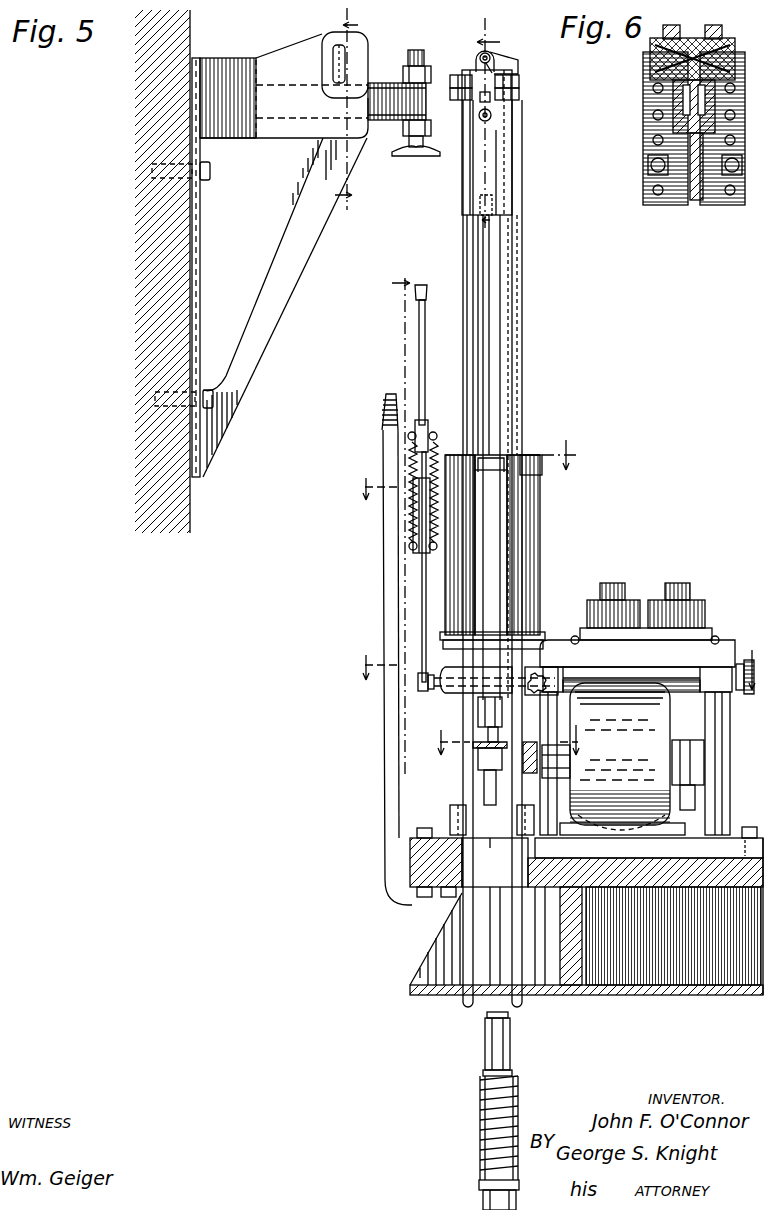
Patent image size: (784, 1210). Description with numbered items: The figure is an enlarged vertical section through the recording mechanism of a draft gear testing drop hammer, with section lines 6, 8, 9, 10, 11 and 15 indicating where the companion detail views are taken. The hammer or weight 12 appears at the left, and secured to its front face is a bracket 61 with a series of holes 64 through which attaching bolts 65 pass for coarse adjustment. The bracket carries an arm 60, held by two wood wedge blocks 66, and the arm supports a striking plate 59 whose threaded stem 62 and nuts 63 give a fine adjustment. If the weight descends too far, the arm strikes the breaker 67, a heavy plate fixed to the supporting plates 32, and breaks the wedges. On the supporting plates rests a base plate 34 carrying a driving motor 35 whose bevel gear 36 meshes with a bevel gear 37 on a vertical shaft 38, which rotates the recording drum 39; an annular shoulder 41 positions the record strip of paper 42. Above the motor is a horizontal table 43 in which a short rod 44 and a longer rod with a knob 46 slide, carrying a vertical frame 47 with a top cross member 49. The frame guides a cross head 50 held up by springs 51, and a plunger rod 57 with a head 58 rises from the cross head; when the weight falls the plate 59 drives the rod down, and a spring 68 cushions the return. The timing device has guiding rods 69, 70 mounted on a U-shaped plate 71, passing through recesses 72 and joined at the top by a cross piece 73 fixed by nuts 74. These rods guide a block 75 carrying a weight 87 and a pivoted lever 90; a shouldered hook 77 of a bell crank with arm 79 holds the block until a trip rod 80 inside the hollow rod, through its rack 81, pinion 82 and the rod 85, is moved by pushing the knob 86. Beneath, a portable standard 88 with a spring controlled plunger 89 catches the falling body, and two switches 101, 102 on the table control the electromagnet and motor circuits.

In FIG. 5, the section line 6— 6 is at (346, 110).
In FIG. 5, the section line 8— 8 is at (468, 470).
In FIG. 5, the section line 9— 9 is at (561, 670).
In FIG. 5, the section line 10— 10 is at (510, 739).
In FIG. 5, the section line 11— 11 is at (407, 517).
In FIG. 5, the weight 12 is at (142, 246).
In FIG. 5, the section line 15- 15 is at (489, 123).
In FIG. 5, the supporting plates 32 is at (411, 870).
In FIG. 5, the base plate 34 is at (735, 836).
In FIG. 5, the driving motor 35 is at (622, 759).
In FIG. 5, the bevel gear 36 is at (545, 760).
In FIG. 5, the bevel gear 37 is at (478, 750).
In FIG. 5, the vertical shaft 38 is at (487, 723).
In FIG. 5, the recording drum 39 is at (541, 470).
In FIG. 5, the annular shoulder 41 is at (546, 640).
In FIG. 5, the record strip of paper 42 is at (541, 530).
In FIG. 5, the horizontal table 43 is at (715, 658).
In FIG. 5, the rod 44 is at (417, 684).
In FIG. 5, the knob 46 is at (742, 664).
In FIG. 5, the vertical frame 47 is at (421, 620).
In FIG. 5, the top cross member 49 is at (430, 434).
In FIG. 5, the cross head 50 is at (414, 560).
In FIG. 5, the springs 51 is at (410, 525).
In FIG. 5, the plunger rod 57 is at (418, 340).
In FIG. 5, the head 58 is at (424, 284).
In FIG. 5, the striking plate 59 is at (412, 157).
In FIG. 5, the arm 60 is at (378, 82).
In FIG. 6, the arm 60 is at (674, 106).
In FIG. 5, the bracket 61 is at (300, 136).
In FIG. 6, the bracket 61 is at (722, 30).
In FIG. 5, the threaded stem 62 is at (424, 52).
In FIG. 5, the nuts 63 is at (431, 72).
In FIG. 5, the holes 64 is at (198, 208).
In FIG. 6, the holes 64 is at (655, 122).
In FIG. 5, the attaching bolts 65 is at (212, 172).
In FIG. 6, the attaching bolts 65 is at (650, 170).
In FIG. 5, the wood wedge blocks 66 is at (336, 78).
In FIG. 6, the wood wedge blocks 66 is at (660, 74).
In FIG. 5, the breaker 67 is at (388, 396).
In FIG. 5, the spring 68 is at (436, 458).
In FIG. 5, the guiding rod 69 is at (522, 304).
In FIG. 5, the guiding rod 70 is at (460, 312).
In FIG. 5, the U-shaped plate 71 is at (456, 806).
In FIG. 5, the recesses 72 is at (583, 813).
In FIG. 5, the cross piece 73 is at (492, 62).
In FIG. 5, the nuts 74 is at (520, 88).
In FIG. 5, the block 75 is at (505, 176).
In FIG. 5, the shouldered hook 77 is at (491, 98).
In FIG. 5, the bell crank arm 79 is at (519, 64).
In FIG. 5, the trip rod 80 is at (520, 268).
In FIG. 5, the rack 81 is at (530, 678).
In FIG. 5, the pinion 82 is at (540, 684).
In FIG. 5, the rod 85 is at (688, 678).
In FIG. 5, the knob 86 is at (752, 690).
In FIG. 5, the weight 87 is at (492, 372).
In FIG. 5, the portable standard 88 is at (482, 1195).
In FIG. 5, the spring controlled plunger 89 is at (510, 1052).
In FIG. 5, the lever 90 is at (492, 116).
In FIG. 5, the switch 101 is at (700, 598).
In FIG. 5, the switch 102 is at (615, 590).